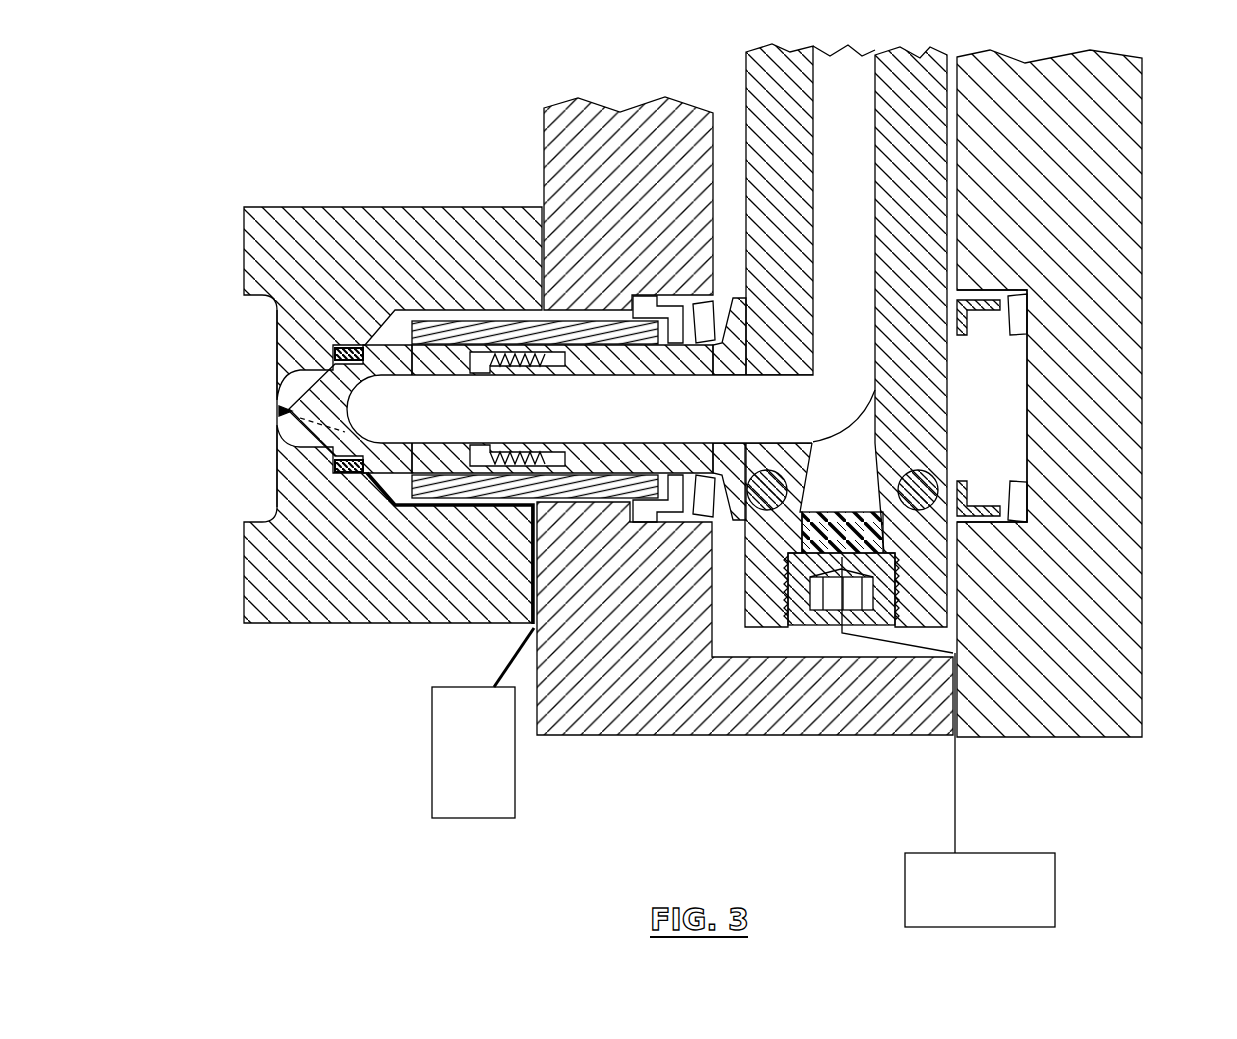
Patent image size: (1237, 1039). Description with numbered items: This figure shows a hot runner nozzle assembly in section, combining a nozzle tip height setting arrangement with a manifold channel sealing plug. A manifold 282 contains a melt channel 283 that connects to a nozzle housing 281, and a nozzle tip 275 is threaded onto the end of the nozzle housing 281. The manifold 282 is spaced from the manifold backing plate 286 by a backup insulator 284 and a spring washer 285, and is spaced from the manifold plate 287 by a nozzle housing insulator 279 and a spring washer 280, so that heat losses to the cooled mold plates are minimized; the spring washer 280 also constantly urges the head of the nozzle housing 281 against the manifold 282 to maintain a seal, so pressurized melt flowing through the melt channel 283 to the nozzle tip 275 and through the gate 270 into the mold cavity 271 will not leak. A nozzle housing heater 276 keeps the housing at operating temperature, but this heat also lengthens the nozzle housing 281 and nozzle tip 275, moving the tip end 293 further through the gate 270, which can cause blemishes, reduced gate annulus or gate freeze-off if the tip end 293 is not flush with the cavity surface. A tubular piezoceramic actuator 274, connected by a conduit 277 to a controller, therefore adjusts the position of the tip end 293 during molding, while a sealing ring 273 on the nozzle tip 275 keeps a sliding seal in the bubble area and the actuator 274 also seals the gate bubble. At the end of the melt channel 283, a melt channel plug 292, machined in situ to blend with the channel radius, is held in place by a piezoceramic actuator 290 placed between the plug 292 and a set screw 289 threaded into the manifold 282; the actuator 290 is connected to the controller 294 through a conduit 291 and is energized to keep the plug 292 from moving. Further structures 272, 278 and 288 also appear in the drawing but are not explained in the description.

The gate 270 is at (281, 411).
The mold cavity 271 is at (283, 345).
The housing body 272 is at (276, 248).
The sealing ring 273 is at (338, 471).
The piezoceramic actuator 274 is at (345, 500).
The nozzle tip 275 is at (392, 505).
The nozzle housing heater 276 is at (445, 333).
The conduit 277 is at (507, 662).
The threaded connection 278 is at (325, 470).
The nozzle housing insulator 279 is at (652, 520).
The spring washer 280 is at (697, 521).
The nozzle housing 281 is at (727, 522).
The manifold 282 is at (915, 233).
The melt channel 283 is at (853, 363).
The backup insulator 284 is at (1020, 548).
The spring washer 285 is at (1015, 502).
The manifold backing plate 286 is at (1105, 412).
The manifold plate 287 is at (590, 140).
The O-ring 288 is at (947, 485).
The set screw 289 is at (822, 548).
The piezoceramic actuator 290 is at (838, 592).
The conduit 291 is at (957, 775).
The melt channel plug 292 is at (863, 498).
The tip end 293 is at (298, 420).
The controller 294 is at (1057, 885).